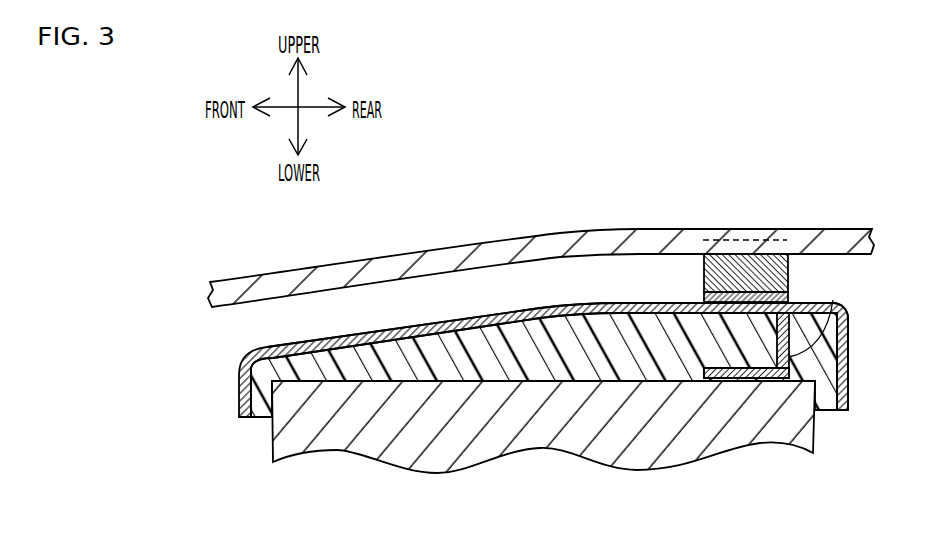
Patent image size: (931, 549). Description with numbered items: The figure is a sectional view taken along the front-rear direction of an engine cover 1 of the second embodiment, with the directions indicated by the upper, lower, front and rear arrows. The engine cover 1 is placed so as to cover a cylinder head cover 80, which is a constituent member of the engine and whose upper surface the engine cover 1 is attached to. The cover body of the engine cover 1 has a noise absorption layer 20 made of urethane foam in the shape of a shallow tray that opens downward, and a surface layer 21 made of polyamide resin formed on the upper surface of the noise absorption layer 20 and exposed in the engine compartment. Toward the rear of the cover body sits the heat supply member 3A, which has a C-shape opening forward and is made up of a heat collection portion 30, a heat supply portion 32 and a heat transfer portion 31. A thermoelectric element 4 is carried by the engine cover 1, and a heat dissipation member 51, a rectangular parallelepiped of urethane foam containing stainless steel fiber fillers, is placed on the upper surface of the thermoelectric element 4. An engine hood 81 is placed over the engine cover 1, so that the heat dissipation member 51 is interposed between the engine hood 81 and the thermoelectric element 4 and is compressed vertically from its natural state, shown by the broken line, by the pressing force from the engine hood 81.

The engine cover 1 is at (250, 350).
The noise absorption layer 20 is at (380, 363).
The surface layer 21 is at (470, 327).
The cylinder head cover 80 is at (363, 440).
The engine hood 81 is at (598, 247).
The heat dissipation member 51 is at (705, 258).
The thermoelectric element 4 is at (705, 298).
The heat supply portion 32 is at (789, 316).
The heat transfer portion 31 is at (817, 313).
The heat collection portion 30 is at (727, 381).
The heat supply member 3A is at (780, 378).